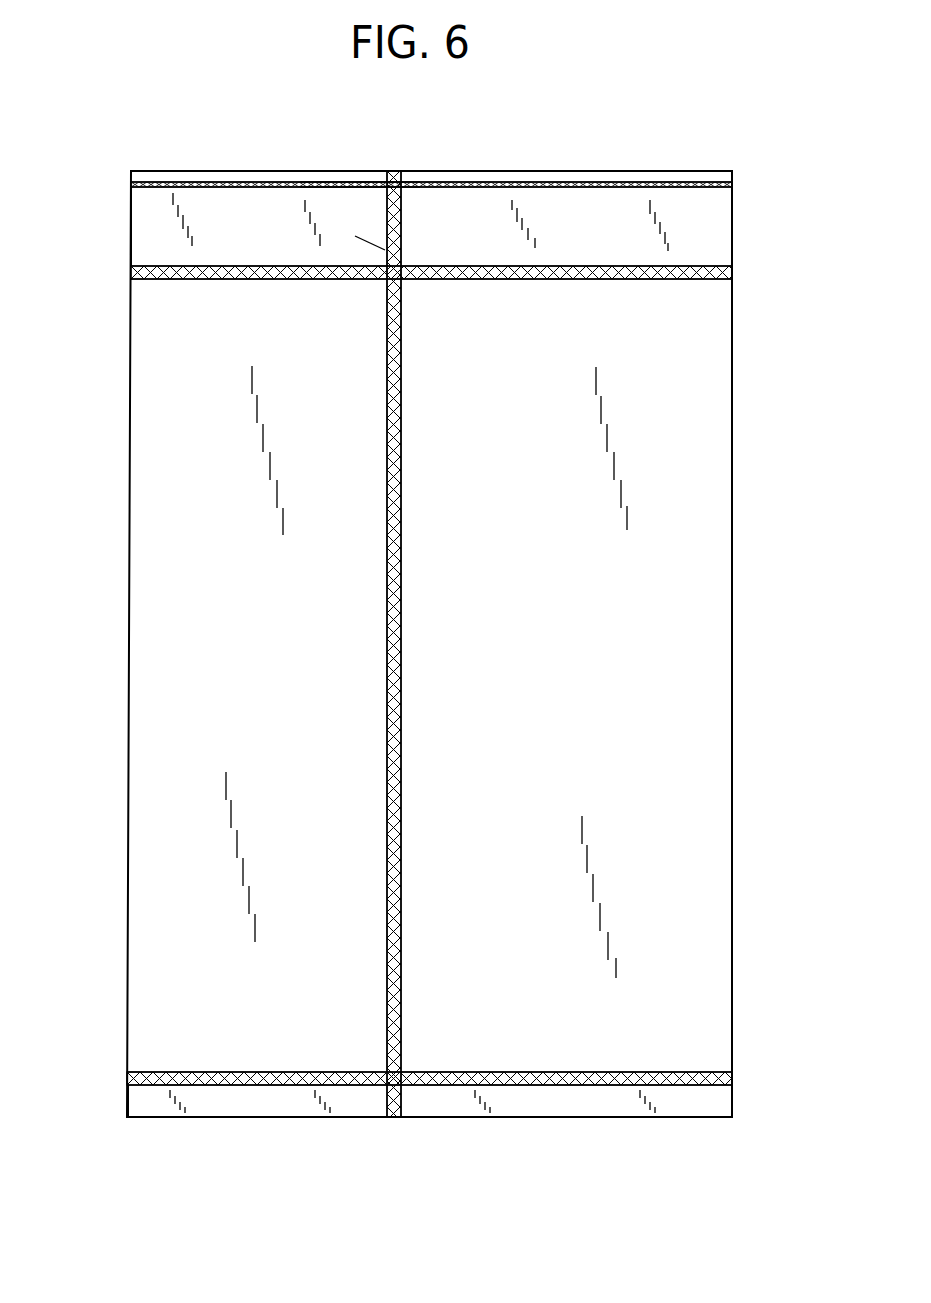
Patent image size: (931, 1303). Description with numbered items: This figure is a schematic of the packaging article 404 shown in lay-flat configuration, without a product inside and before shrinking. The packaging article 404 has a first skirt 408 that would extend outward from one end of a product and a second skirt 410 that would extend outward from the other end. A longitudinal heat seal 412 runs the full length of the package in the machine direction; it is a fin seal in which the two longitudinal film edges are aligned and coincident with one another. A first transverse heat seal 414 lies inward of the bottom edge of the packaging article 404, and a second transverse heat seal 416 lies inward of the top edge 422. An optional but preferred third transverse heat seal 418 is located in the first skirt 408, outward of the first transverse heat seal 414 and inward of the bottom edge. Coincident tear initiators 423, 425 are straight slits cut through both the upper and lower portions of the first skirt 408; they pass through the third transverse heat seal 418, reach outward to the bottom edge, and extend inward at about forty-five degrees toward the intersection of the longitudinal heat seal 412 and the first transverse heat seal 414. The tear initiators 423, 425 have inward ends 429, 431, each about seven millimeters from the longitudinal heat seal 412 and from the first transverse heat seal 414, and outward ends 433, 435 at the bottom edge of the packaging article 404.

The packaging article 404 is at (750, 521).
The first skirt 408 is at (155, 230).
The second skirt 410 is at (230, 1105).
The longitudinal heat seal 412 is at (394, 545).
The first transverse heat seal 414 is at (680, 273).
The second transverse heat seal 416 is at (614, 1073).
The third transverse heat seal 418 is at (633, 174).
The top edge 422 is at (463, 1118).
The tear initiator 423 is at (370, 157).
The tear initiator 425 is at (360, 184).
The inward end 429 is at (464, 283).
The inward end 431 is at (370, 247).
The outward end 433 is at (427, 177).
The outward end 435 is at (431, 184).